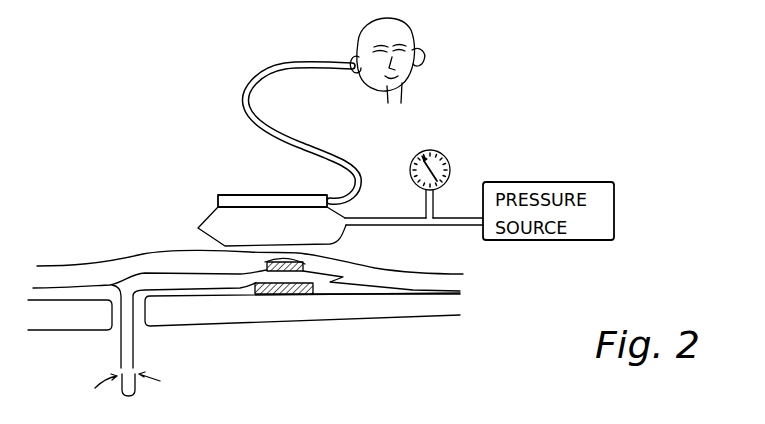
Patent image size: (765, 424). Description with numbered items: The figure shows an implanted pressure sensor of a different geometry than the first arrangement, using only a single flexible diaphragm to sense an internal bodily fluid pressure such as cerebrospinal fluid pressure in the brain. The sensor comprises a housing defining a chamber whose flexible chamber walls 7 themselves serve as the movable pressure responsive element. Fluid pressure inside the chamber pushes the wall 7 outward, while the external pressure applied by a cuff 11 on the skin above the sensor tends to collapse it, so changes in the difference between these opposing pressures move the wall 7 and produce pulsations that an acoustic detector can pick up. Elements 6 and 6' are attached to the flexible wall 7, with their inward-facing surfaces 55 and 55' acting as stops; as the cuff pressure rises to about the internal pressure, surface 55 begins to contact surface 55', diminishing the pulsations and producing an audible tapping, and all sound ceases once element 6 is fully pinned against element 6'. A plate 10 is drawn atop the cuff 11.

The rigid plate of pressure cuff 10 is at (243, 200).
The cuff 11 is at (215, 221).
The inward-facing surface 55 is at (211, 245).
The inward-facing surface 55' is at (262, 336).
The chamber wall 7 is at (305, 266).
The element 6 is at (257, 340).
The element 6' is at (296, 332).